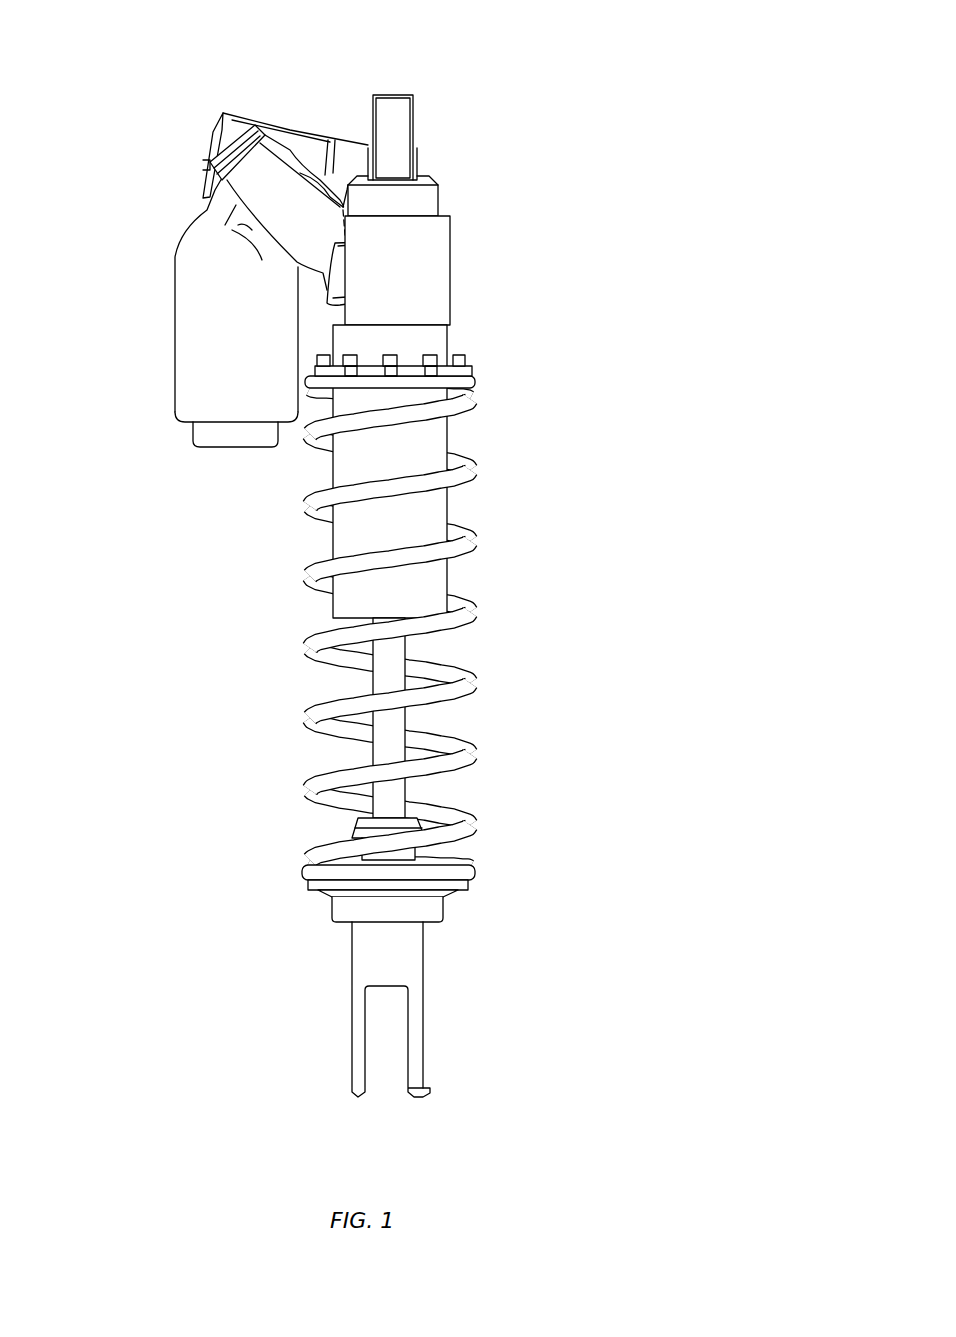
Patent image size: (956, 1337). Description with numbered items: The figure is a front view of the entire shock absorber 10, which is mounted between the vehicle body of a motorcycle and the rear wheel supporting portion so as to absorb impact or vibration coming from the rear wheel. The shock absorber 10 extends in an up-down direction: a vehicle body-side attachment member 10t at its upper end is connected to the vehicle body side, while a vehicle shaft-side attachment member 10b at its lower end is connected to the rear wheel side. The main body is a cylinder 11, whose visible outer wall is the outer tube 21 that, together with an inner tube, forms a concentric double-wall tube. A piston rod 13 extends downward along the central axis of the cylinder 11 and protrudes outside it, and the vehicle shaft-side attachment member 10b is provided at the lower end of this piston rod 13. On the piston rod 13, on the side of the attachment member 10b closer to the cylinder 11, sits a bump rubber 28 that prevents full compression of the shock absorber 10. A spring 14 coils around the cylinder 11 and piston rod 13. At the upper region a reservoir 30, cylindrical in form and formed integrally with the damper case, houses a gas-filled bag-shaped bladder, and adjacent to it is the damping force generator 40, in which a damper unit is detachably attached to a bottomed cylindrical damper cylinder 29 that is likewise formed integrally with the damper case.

The shock absorber 10 is at (432, 592).
The vehicle body-side attachment member 10t is at (415, 121).
The vehicle shaft-side attachment member 10b is at (415, 1078).
The cylinder 11 is at (457, 471).
The outer tube 21 is at (452, 578).
The piston rod 13 is at (420, 718).
The spring 14 is at (412, 596).
The bump rubber 28 is at (356, 822).
The damper cylinder 29 is at (300, 130).
The reservoir 30 is at (175, 338).
The damping force generator 40 is at (287, 165).